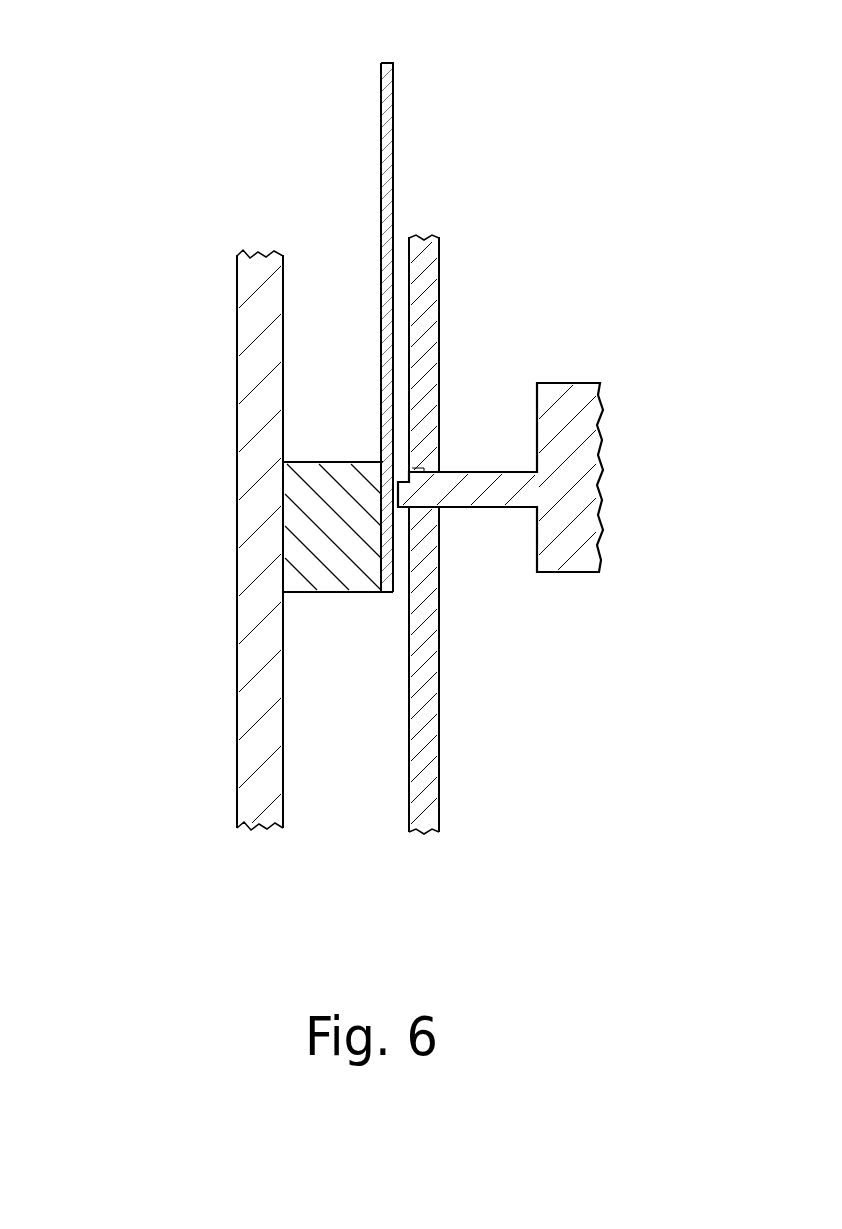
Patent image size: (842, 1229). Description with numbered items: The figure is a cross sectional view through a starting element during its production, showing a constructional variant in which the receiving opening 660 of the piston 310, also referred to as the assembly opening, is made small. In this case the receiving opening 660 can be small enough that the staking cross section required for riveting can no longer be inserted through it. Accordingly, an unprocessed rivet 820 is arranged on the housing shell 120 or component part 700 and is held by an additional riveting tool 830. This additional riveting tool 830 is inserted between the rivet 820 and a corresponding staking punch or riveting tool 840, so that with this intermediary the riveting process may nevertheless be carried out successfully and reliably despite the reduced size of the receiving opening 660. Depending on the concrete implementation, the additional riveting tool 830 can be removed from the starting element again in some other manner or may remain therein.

The component part 700 is at (262, 270).
The housing shell 120 is at (233, 282).
The rivet 820 is at (300, 508).
The additional riveting tool 830 is at (393, 88).
The piston 310 is at (423, 261).
The staking punch 840 is at (585, 392).
The receiving opening 660 is at (421, 462).